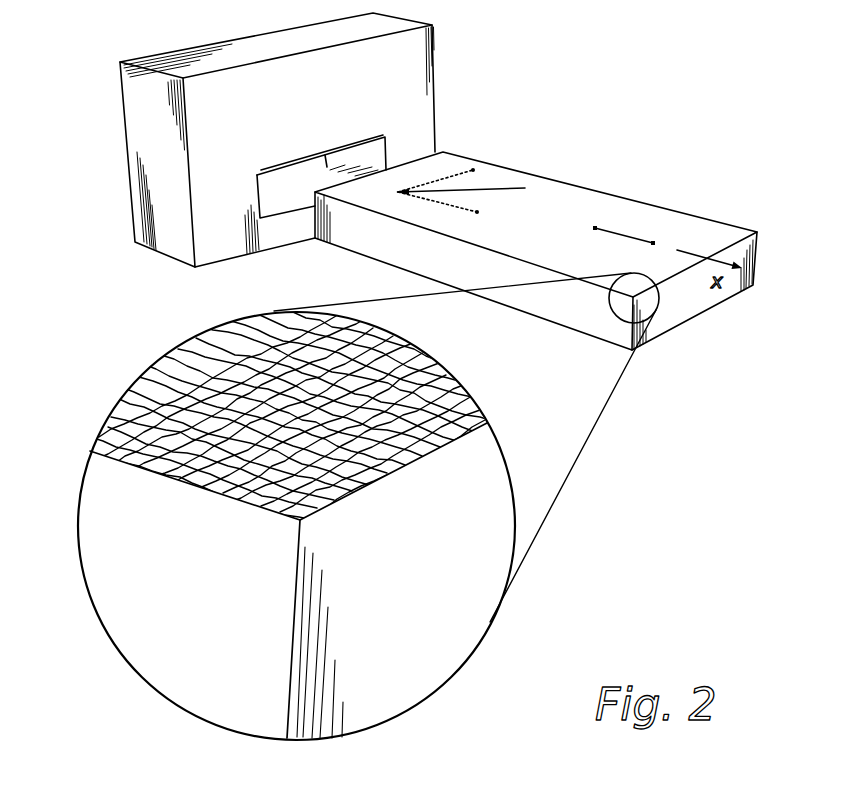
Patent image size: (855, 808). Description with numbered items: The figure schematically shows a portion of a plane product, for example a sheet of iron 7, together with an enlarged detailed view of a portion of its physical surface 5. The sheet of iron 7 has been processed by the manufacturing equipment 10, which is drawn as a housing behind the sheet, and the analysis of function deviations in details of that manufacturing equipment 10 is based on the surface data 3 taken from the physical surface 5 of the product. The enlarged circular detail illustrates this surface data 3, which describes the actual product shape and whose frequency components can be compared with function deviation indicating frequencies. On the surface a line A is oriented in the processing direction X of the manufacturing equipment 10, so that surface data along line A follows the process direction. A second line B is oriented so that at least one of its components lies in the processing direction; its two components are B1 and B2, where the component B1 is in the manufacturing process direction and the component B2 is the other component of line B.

The manufacturing equipment 10 is at (122, 112).
The physical surface 5 is at (715, 233).
The sheet of iron 7 is at (678, 307).
The surface data 3 is at (428, 399).
The line A is at (628, 232).
The line B is at (487, 187).
The component B1 is at (427, 202).
The component B2 is at (452, 178).